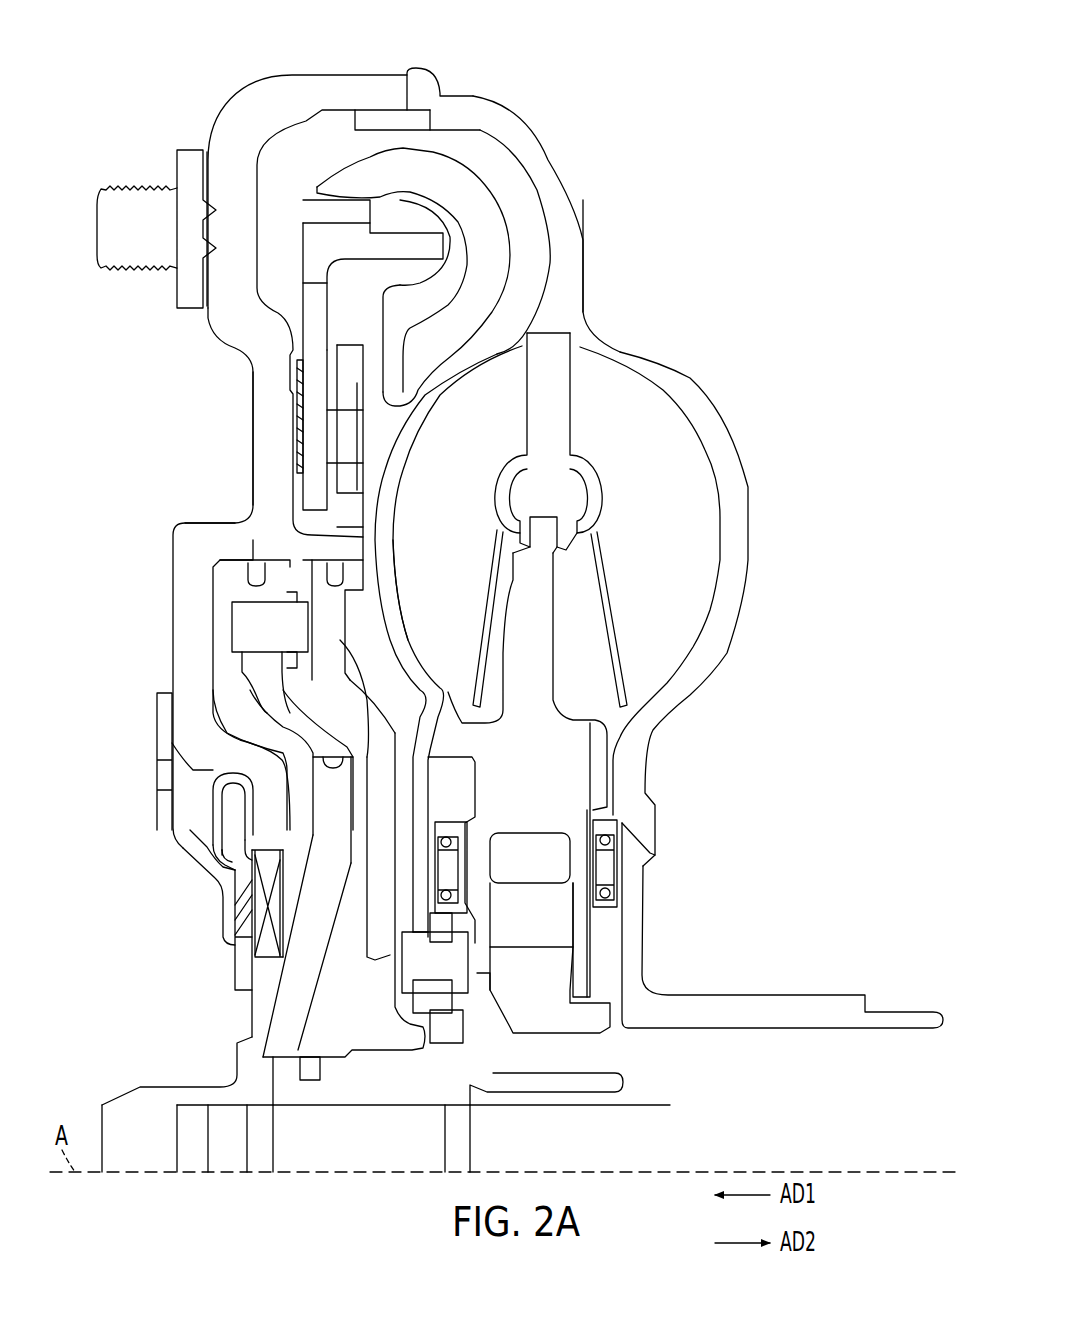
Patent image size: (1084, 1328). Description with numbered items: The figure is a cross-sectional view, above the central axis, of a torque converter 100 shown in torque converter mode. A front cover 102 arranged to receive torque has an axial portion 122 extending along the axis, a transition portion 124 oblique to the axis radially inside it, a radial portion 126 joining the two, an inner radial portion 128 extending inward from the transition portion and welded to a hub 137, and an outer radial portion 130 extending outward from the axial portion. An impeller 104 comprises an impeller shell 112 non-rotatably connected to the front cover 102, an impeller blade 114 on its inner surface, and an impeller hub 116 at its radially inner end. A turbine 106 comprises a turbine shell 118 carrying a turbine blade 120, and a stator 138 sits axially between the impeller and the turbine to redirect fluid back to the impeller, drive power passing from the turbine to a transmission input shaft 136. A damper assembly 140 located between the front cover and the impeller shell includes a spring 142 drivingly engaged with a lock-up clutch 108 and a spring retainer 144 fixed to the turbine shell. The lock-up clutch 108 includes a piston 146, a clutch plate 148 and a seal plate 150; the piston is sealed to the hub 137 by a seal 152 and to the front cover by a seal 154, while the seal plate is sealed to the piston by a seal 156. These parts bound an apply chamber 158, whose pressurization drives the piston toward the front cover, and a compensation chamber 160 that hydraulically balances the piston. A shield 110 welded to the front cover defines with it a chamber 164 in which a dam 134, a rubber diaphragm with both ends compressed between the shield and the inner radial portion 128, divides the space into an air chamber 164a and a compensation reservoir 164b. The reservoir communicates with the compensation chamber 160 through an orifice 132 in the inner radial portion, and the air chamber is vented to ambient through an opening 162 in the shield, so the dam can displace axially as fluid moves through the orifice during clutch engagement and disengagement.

The torque converter 100 is at (720, 72).
The front cover 102 is at (225, 83).
The impeller 104 is at (520, 100).
The turbine 106 is at (512, 323).
The lock-up clutch 108 is at (302, 520).
The shield 110 is at (185, 862).
The impeller shell 112 is at (585, 248).
The impeller blade 114 is at (664, 606).
The impeller hub 116 is at (647, 937).
The turbine shell 118 is at (443, 394).
The turbine blade 120 is at (425, 560).
The axial portion 122 is at (226, 523).
The transition portion 124 is at (178, 752).
The radial portion 126 is at (171, 607).
The inner radial portion 128 is at (250, 910).
The outer radial portion 130 is at (251, 398).
The orifice 132 is at (262, 940).
The dam 134 is at (178, 833).
The transmission input shaft 136 is at (207, 1142).
The hub 137 is at (348, 1030).
The stator 138 is at (600, 625).
The damper assembly 140 is at (454, 150).
The spring 142 is at (357, 318).
The spring retainer 144 is at (358, 162).
The piston 146 is at (237, 600).
The clutch plate 148 is at (312, 317).
The seal plate 150 is at (305, 692).
The seal 152 is at (338, 768).
The seal 154 is at (257, 565).
The seal 156 is at (333, 582).
The apply chamber 158 is at (348, 645).
The compensation chamber 160 is at (214, 685).
The opening 162 is at (165, 757).
The chamber 164 is at (168, 787).
The air chamber 164a is at (210, 800).
The compensation reservoir 164b is at (217, 800).